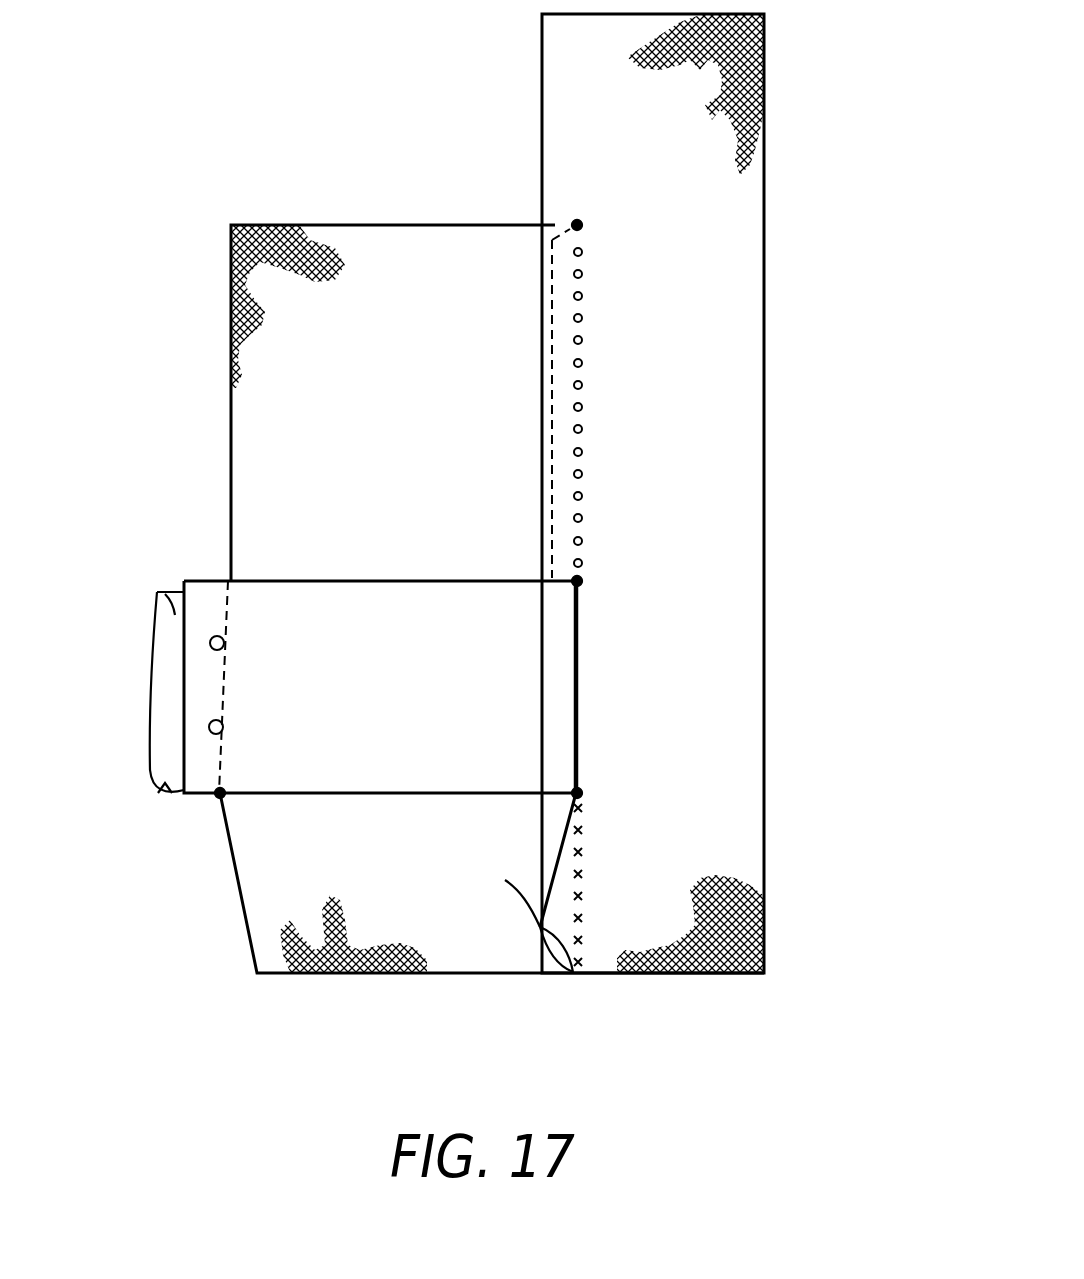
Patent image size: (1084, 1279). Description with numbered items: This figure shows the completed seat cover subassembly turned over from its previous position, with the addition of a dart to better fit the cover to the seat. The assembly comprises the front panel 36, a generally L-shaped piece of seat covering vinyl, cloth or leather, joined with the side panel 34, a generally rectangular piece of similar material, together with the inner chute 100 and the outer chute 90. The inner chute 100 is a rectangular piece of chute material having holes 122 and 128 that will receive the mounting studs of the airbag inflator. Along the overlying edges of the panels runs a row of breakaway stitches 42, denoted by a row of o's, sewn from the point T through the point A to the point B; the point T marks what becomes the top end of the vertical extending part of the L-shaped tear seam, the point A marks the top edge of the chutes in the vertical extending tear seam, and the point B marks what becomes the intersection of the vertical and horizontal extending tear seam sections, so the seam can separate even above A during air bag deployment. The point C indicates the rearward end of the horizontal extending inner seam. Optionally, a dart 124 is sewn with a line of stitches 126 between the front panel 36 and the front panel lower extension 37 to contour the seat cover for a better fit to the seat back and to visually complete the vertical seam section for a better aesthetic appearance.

The front panel 36 is at (600, 172).
The side panel 34 is at (367, 397).
The front panel lower extension 37 is at (312, 860).
The inner chute 100 is at (325, 640).
The outer chute 90 is at (160, 592).
The hole 128 is at (208, 642).
The hole 122 is at (207, 730).
The row of breakaway stitches 42 is at (583, 407).
The line of stitches 126 is at (588, 851).
The dart 124 is at (540, 905).
The top end of vertical extending tear seam T is at (583, 225).
The top edge of chutes in vertical extending tear seam A is at (580, 578).
The intersection point of vertical and horizontal tear seam sections B is at (580, 790).
The rearward end of horizontal extending inner seam C is at (220, 795).